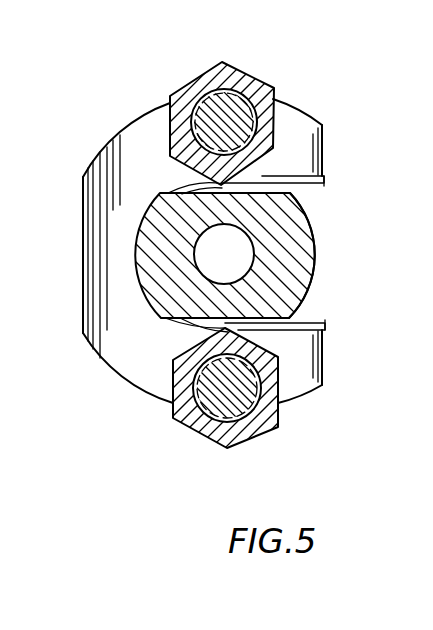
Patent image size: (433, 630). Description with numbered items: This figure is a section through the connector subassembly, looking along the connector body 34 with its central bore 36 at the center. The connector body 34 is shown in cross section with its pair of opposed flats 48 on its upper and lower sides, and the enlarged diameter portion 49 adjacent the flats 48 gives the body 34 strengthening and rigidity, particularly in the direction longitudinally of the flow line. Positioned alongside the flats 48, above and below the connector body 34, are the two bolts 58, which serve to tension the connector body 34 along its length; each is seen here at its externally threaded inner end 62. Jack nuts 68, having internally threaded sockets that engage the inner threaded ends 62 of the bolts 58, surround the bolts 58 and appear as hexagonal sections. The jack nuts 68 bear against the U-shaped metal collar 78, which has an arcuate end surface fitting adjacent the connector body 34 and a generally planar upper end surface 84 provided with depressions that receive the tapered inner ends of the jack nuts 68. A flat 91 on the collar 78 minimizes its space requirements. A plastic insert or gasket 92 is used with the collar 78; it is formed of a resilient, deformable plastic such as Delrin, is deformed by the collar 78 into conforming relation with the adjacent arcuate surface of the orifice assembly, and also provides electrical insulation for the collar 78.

The connector body 34 is at (298, 222).
The central bore 36 is at (213, 267).
The flats 48 is at (177, 192).
The enlarged diameter portion 49 is at (302, 253).
The bolts 58 is at (238, 113).
The inner threaded end 62 is at (202, 92).
The jack nuts 68 is at (235, 68).
The U-shaped collar 78 is at (110, 345).
The upper end surface 84 is at (150, 122).
The flat 91 is at (83, 257).
The gasket 92 is at (313, 320).